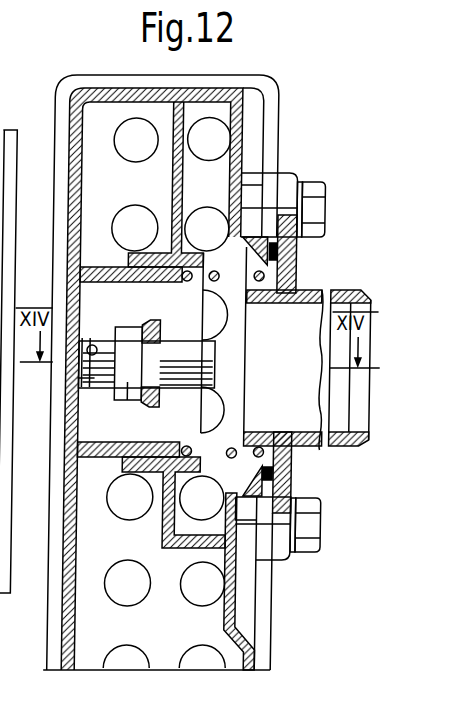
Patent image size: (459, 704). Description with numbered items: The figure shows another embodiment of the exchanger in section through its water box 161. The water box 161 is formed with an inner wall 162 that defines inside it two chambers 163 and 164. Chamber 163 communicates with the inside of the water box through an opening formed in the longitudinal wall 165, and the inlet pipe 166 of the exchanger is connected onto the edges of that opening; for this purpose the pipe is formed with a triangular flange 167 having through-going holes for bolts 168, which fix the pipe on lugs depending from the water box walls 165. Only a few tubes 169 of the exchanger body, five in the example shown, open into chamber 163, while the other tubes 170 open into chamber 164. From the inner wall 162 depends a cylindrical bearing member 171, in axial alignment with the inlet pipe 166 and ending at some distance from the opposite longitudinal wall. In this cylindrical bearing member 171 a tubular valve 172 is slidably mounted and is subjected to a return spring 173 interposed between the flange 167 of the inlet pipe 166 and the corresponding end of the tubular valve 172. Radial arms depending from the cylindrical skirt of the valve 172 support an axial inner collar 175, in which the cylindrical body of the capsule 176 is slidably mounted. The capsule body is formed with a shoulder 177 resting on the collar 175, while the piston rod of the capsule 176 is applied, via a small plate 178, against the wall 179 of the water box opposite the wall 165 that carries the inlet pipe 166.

The water box 161 is at (279, 80).
The inner wall 162 is at (159, 147).
The chamber 163 is at (204, 182).
The chamber 164 is at (95, 154).
The longitudinal wall 165 is at (256, 608).
The inlet pipe 166 is at (312, 290).
The triangular flange 167 is at (291, 480).
The bolts 168 is at (315, 180).
The tubes 169 is at (214, 428).
The tubes 170 is at (151, 593).
The cylindrical bearing member 171 is at (125, 462).
The tubular valve 172 is at (148, 284).
The return spring 173 is at (200, 283).
The axial inner collar 175 is at (156, 404).
The capsule 176 is at (205, 360).
The shoulder 177 is at (129, 396).
The small plate 178 is at (80, 378).
The wall 179 is at (71, 593).